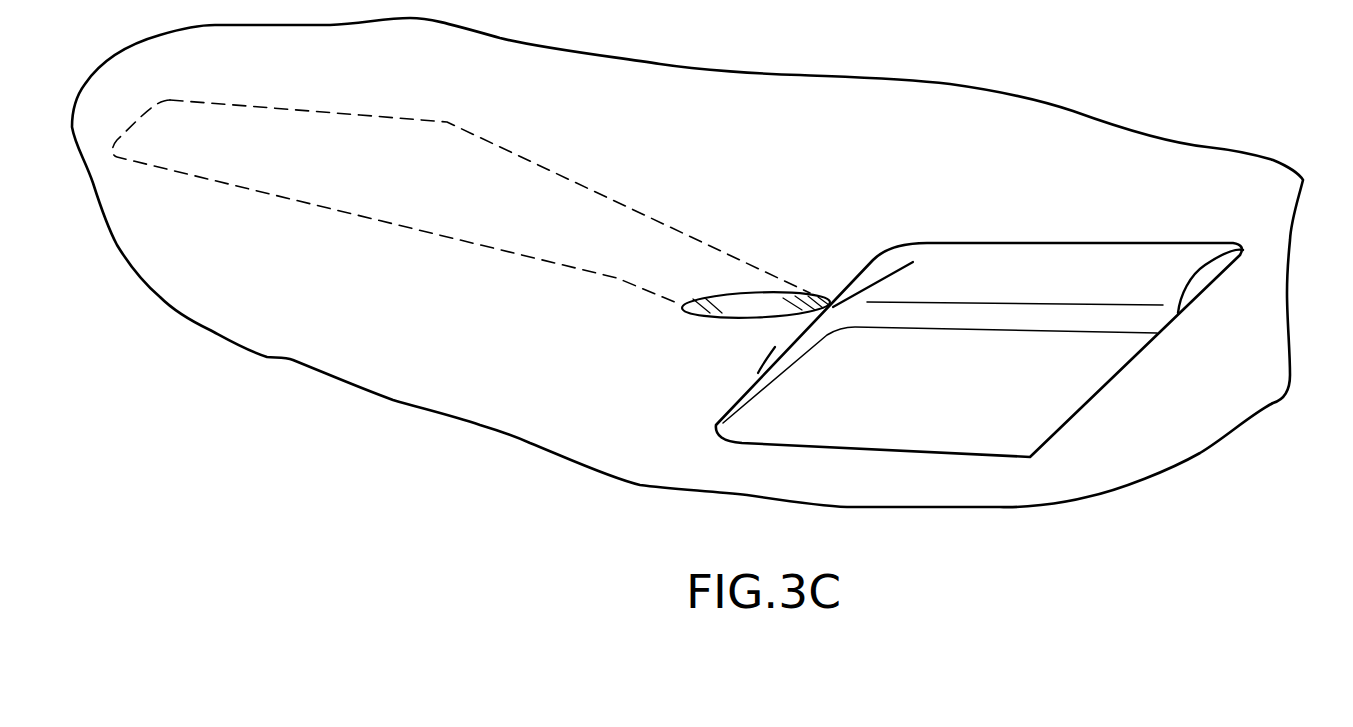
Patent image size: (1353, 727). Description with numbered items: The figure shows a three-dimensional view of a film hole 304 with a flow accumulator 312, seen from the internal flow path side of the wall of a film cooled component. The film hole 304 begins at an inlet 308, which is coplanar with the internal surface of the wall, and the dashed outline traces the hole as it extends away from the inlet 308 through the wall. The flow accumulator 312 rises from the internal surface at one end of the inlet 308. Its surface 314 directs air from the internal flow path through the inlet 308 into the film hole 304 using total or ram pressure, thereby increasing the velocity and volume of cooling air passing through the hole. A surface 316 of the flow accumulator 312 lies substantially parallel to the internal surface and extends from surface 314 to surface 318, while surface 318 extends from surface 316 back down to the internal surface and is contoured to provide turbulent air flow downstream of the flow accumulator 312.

The film hole 304 is at (618, 278).
The inlet 308 is at (753, 308).
The flow accumulator 312 is at (1023, 288).
The surface 314 is at (847, 283).
The surface 316 is at (1052, 395).
The surface 318 is at (1198, 293).